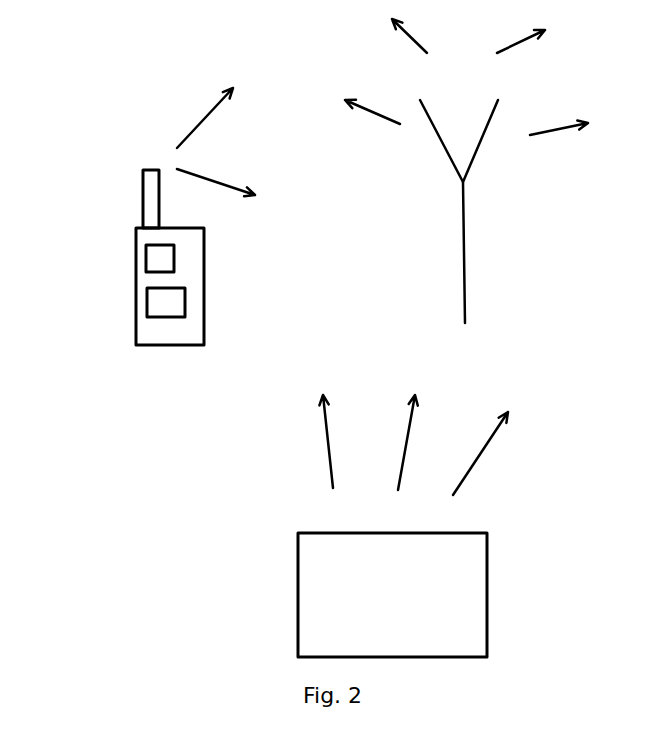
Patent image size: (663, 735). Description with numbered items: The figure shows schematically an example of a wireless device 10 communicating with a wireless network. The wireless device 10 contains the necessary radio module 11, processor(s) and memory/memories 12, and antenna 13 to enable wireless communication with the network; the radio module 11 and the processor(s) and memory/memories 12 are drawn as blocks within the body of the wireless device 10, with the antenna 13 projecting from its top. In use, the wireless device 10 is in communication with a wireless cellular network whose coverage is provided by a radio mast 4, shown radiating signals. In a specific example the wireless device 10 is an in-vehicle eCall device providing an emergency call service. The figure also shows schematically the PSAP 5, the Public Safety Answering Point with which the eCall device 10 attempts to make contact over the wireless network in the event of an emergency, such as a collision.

The radio mast 4 is at (465, 212).
The PSAP 5 is at (490, 588).
The wireless device 10 is at (137, 267).
The radio module 11 is at (173, 252).
The processor(s) and memory/memories 12 is at (147, 305).
The antenna 13 is at (140, 183).